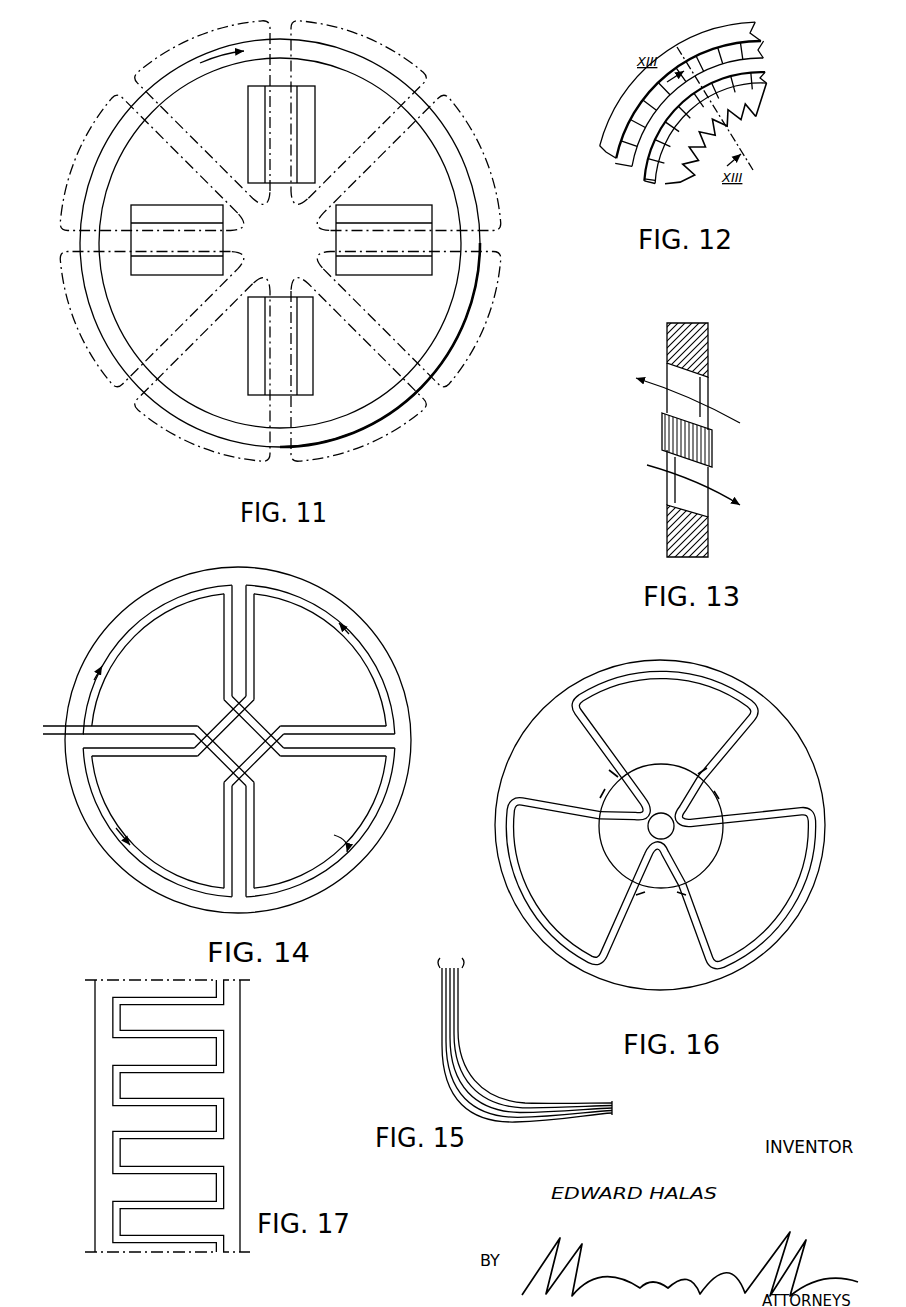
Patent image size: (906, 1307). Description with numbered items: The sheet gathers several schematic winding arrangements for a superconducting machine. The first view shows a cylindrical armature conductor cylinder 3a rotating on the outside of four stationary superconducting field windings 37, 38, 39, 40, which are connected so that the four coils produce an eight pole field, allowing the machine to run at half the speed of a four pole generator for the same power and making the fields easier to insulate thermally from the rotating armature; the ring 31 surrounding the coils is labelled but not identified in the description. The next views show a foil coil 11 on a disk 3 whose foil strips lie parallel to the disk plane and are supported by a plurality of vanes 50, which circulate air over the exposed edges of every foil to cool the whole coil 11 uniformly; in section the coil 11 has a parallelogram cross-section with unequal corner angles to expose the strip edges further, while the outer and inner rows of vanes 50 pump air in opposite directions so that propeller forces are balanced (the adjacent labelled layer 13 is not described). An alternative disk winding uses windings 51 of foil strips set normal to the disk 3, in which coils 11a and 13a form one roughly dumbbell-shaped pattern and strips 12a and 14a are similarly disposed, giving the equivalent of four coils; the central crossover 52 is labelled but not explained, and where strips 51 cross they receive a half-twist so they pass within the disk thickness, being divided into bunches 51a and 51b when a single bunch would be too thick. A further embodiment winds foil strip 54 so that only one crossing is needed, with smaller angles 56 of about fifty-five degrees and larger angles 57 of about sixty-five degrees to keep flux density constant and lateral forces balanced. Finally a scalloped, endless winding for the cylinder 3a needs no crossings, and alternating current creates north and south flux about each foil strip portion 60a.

In FIG. 11, the stator ring 31 is at (478, 244).
In FIG. 11, the superconducting field winding 37 is at (315, 130).
In FIG. 11, the superconducting field winding 38 is at (375, 194).
In FIG. 11, the superconducting field winding 39 is at (313, 357).
In FIG. 11, the superconducting field winding 40 is at (177, 192).
In FIG. 12, the disk 3 is at (731, 42).
In FIG. 14, the disk 3 is at (238, 740).
In FIG. 16, the disk 3 is at (783, 933).
In FIG. 12, the foil coil 11 is at (760, 72).
In FIG. 13, the foil coil 11 is at (706, 452).
In FIG. 13, the conductor 13 is at (700, 352).
In FIG. 12, the vanes 50 is at (758, 97).
In FIG. 13, the vanes 50 is at (700, 502).
In FIG. 14, the windings 51 is at (160, 603).
In FIG. 14, the crossover 52 is at (258, 715).
In FIG. 14, the coil 11a is at (140, 643).
In FIG. 14, the strips 12a is at (336, 641).
In FIG. 14, the coil 13a is at (320, 822).
In FIG. 14, the strips 14a is at (138, 833).
In FIG. 15, the bunch of strips 51a is at (493, 1070).
In FIG. 15, the bunch of strips 51b is at (455, 1093).
In FIG. 16, the foil strip 54 is at (737, 693).
In FIG. 16, the angle 56 is at (657, 897).
In FIG. 16, the angle 57 is at (720, 853).
In FIG. 17, the foil strip portion 60a is at (160, 1243).
In FIG. 17, the armature conductor cylinder 3a is at (240, 1035).